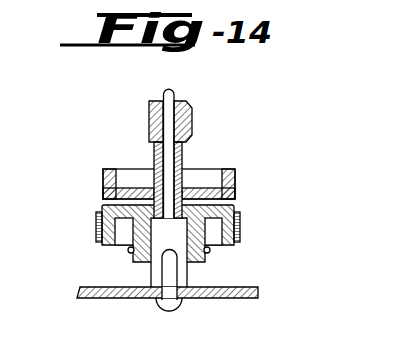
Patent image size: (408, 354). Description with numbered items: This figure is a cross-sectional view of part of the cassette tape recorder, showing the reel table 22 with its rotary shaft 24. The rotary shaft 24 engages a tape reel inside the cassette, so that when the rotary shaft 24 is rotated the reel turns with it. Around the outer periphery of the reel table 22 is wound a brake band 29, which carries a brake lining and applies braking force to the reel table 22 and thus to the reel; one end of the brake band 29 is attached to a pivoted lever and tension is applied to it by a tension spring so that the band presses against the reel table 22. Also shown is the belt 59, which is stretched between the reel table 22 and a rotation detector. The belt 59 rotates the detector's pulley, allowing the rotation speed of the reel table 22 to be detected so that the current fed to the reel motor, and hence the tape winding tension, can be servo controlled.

The reel table 22 is at (102, 242).
The rotary shaft 24 is at (193, 110).
The brake band 29 is at (240, 214).
The belt 59 is at (208, 254).